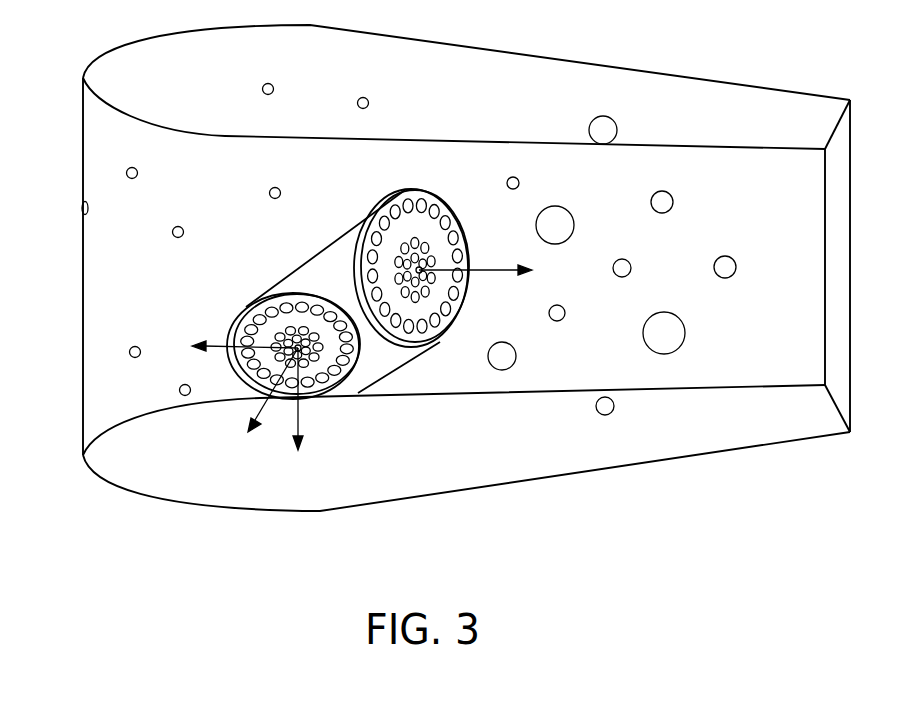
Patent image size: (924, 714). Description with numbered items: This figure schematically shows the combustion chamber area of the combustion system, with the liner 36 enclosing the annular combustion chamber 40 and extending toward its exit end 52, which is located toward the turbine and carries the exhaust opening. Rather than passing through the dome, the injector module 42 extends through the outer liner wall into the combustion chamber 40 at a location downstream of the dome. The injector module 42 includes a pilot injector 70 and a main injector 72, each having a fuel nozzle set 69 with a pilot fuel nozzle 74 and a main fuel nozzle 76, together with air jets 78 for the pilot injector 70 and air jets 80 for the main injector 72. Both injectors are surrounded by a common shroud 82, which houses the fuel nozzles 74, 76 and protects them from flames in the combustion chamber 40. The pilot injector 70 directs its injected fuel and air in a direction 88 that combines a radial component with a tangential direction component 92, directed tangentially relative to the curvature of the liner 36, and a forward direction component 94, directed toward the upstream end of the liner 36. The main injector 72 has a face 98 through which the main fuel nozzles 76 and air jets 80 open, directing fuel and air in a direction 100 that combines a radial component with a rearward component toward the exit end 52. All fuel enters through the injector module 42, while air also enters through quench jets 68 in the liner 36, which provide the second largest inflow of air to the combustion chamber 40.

The liner 36 is at (688, 367).
The combustion chamber 40 is at (208, 181).
The injector module 42 is at (273, 274).
The exit end 52 is at (838, 128).
The quench jets 68 is at (631, 268).
The fuel nozzle set 69 is at (416, 288).
The pilot injector 70 is at (252, 315).
The main injector 72 is at (412, 190).
The pilot fuel nozzle 74 is at (312, 350).
The main fuel nozzle 76 is at (416, 243).
The air jets 78 is at (336, 376).
The air jets 80 is at (436, 210).
The common shroud 82 is at (339, 230).
The direction 88 is at (252, 412).
The tangential direction component 92 is at (307, 423).
The forward direction component 94 is at (215, 345).
The face 98 is at (437, 253).
The direction 100 is at (477, 275).